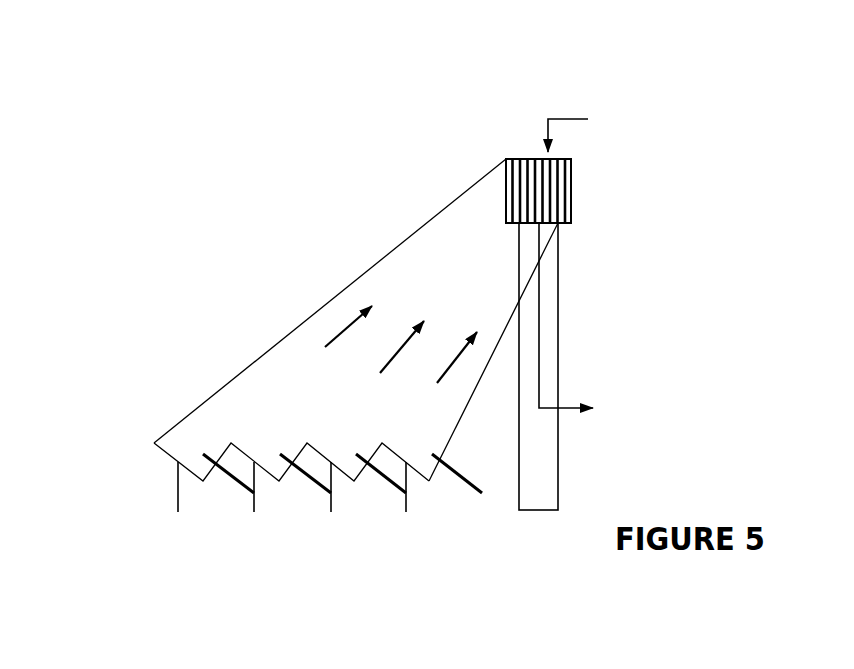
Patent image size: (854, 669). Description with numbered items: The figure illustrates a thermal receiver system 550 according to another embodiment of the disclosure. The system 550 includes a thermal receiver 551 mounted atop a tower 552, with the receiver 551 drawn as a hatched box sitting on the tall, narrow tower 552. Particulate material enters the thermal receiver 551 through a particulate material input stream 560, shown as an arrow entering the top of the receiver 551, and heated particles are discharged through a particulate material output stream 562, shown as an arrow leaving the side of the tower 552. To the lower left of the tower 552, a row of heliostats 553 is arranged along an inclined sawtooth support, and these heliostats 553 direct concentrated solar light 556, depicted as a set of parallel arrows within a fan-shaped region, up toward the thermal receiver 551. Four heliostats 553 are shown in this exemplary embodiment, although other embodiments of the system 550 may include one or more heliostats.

The thermal receiver system 550 is at (428, 98).
The thermal receiver 551 is at (558, 160).
The tower 552 is at (518, 485).
The heliostats 553 is at (161, 427).
The concentrated solar light 556 is at (328, 322).
The particulate material input stream 560 is at (567, 119).
The particulate material output stream 562 is at (577, 404).